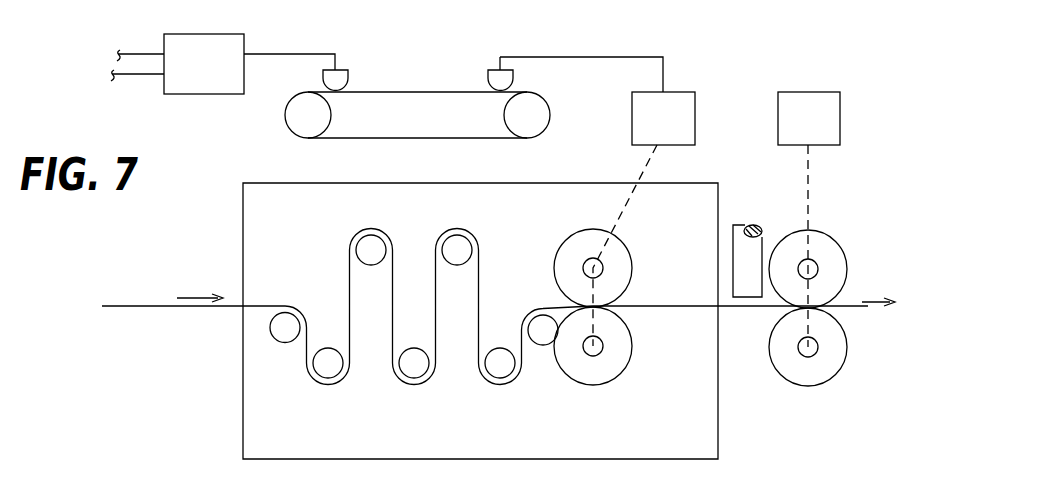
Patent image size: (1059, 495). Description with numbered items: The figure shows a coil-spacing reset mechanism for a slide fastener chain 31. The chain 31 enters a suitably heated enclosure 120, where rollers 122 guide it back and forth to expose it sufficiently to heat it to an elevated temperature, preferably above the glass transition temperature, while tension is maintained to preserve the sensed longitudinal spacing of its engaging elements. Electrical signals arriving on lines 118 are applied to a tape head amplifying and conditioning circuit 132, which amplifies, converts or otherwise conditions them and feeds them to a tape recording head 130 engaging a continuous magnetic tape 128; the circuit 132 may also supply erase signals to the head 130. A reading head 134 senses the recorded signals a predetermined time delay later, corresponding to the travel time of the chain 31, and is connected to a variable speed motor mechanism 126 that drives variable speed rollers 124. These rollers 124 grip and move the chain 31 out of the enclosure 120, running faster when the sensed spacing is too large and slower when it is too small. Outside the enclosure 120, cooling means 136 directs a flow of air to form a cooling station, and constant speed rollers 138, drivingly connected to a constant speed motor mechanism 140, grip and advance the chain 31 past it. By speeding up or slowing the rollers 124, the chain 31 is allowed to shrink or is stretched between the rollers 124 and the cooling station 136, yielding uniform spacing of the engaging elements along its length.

The slide fastener chain 31 is at (150, 305).
The lines 118 is at (110, 64).
The heated enclosure 120 is at (303, 183).
The rollers 122 is at (362, 249).
The variable speed rollers 124 is at (607, 327).
The variable speed motor mechanism 126 is at (677, 107).
The continuous magnetic tape 128 is at (368, 92).
The tape recording head 130 is at (339, 81).
The tape head amplifying and conditioning circuit 132 is at (200, 52).
The reading head 134 is at (507, 82).
The cooling means 136 is at (752, 253).
The constant speed rollers 138 is at (827, 332).
The constant speed motor mechanism 140 is at (793, 108).